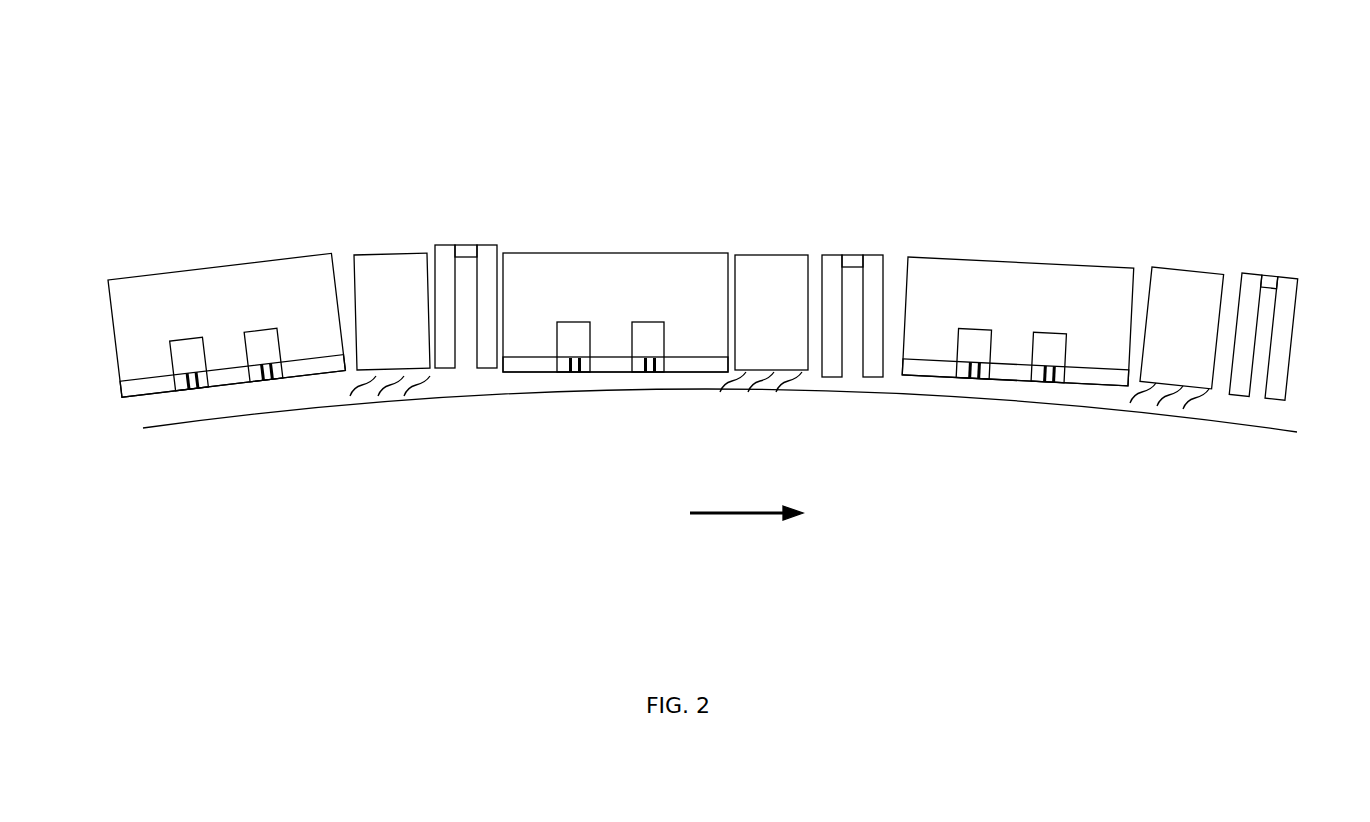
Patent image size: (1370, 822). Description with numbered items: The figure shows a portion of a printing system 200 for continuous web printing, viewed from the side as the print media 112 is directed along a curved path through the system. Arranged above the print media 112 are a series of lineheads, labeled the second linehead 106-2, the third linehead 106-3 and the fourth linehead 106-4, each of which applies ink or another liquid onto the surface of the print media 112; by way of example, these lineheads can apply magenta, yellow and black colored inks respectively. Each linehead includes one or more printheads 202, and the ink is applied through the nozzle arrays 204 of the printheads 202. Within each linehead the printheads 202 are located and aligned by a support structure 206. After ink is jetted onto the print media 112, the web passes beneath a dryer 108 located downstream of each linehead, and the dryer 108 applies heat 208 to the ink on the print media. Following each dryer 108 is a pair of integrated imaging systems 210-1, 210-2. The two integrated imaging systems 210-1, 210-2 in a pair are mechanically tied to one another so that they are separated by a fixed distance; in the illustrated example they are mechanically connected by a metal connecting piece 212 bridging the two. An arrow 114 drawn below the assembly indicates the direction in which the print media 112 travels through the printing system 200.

The printing system 200 is at (702, 84).
The second linehead 106-2 is at (273, 257).
The third linehead 106-3 is at (617, 253).
The fourth linehead 106-4 is at (997, 260).
The dryer 108 is at (393, 262).
The print media 112 is at (1267, 423).
The direction arrow 114 is at (740, 516).
The printhead 202 is at (183, 340).
The nozzle array 204 is at (193, 392).
The support structure 206 is at (120, 382).
The heat 208 is at (340, 405).
The integrated imaging system 210-1 is at (447, 250).
The integrated imaging system 210-2 is at (497, 247).
The metal connecting piece 212 is at (470, 255).